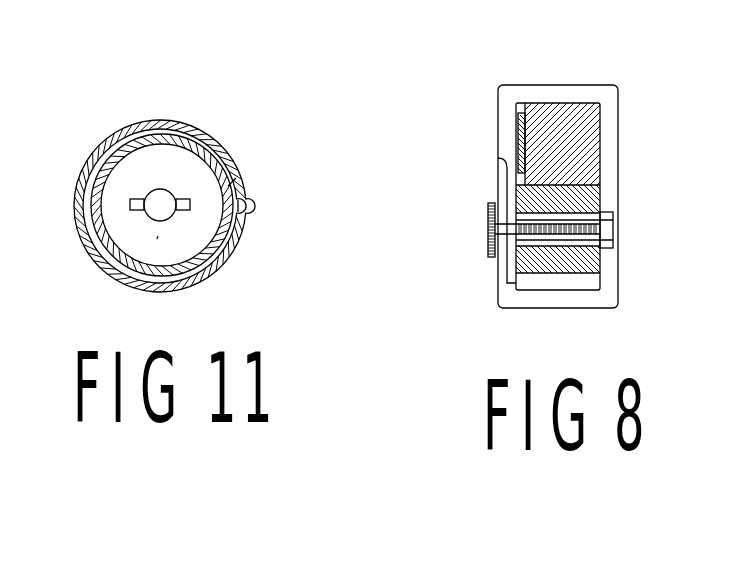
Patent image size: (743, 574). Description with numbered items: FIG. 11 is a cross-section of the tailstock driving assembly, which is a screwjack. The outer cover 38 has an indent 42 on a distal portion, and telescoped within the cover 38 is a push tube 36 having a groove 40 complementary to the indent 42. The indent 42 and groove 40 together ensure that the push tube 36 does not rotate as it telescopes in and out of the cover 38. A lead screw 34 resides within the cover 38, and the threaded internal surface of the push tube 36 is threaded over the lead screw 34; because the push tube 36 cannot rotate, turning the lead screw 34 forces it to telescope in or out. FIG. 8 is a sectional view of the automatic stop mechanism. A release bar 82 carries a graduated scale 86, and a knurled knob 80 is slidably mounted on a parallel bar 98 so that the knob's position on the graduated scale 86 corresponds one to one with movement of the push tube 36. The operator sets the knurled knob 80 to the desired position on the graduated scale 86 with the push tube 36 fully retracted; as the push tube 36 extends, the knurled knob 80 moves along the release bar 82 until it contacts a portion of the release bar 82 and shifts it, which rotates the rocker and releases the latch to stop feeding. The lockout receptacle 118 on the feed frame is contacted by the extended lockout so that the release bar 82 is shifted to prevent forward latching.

In FIG. 11, the lead screw 34 is at (160, 200).
In FIG. 11, the push tube 36 is at (197, 142).
In FIG. 11, the cover 38 is at (225, 250).
In FIG. 11, the groove 40 is at (218, 190).
In FIG. 11, the indent 42 is at (240, 204).
In FIG. 8, the knurled knob 80 is at (487, 230).
In FIG. 8, the release bar 82 is at (578, 145).
In FIG. 8, the graduated scale 86 is at (518, 123).
In FIG. 8, the parallel bar 98 is at (598, 193).
In FIG. 8, the lockout receptacle 118 is at (613, 285).